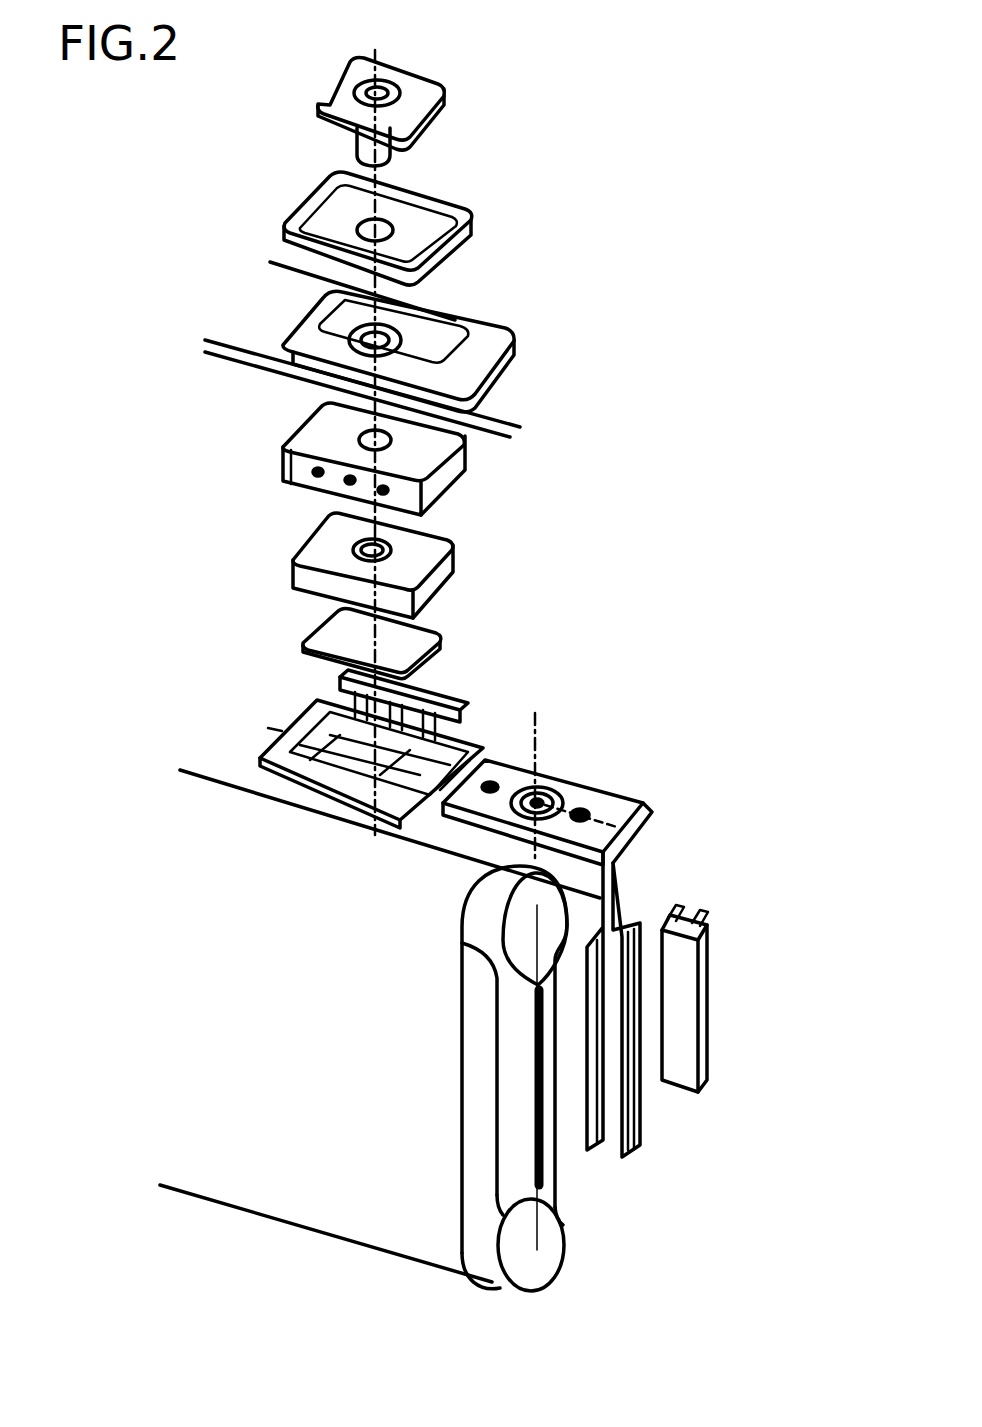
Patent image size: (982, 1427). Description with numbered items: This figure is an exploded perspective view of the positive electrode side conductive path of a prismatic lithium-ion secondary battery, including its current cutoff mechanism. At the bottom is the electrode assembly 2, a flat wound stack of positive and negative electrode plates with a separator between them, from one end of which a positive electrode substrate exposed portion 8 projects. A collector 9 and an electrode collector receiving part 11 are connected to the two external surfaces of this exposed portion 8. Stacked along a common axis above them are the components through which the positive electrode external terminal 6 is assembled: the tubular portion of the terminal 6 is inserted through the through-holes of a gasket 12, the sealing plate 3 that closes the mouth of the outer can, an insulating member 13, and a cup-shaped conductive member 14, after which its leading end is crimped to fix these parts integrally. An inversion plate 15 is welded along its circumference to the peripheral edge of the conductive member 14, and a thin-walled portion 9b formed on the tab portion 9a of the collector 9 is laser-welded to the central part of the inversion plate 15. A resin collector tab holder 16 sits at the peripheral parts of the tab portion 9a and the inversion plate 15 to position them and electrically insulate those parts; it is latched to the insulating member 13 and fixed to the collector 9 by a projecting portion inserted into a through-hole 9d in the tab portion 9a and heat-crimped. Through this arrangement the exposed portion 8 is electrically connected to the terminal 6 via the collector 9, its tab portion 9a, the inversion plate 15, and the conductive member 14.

The electrode assembly 2 is at (257, 1138).
The sealing plate 3 is at (479, 349).
The positive electrode external terminal 6 is at (474, 101).
The positive electrode substrate exposed portion 8 is at (520, 1158).
The collector 9 is at (620, 1097).
The tab portion 9a is at (580, 797).
The thin-walled portion 9b is at (578, 792).
The through-hole 9d is at (535, 713).
The electrode collector receiving part 11 is at (677, 963).
The gasket 12 is at (471, 209).
The insulating member 13 is at (436, 453).
The cup-shaped conductive member 14 is at (432, 560).
The inversion plate 15 is at (420, 648).
The collector tab holder 16 is at (333, 700).